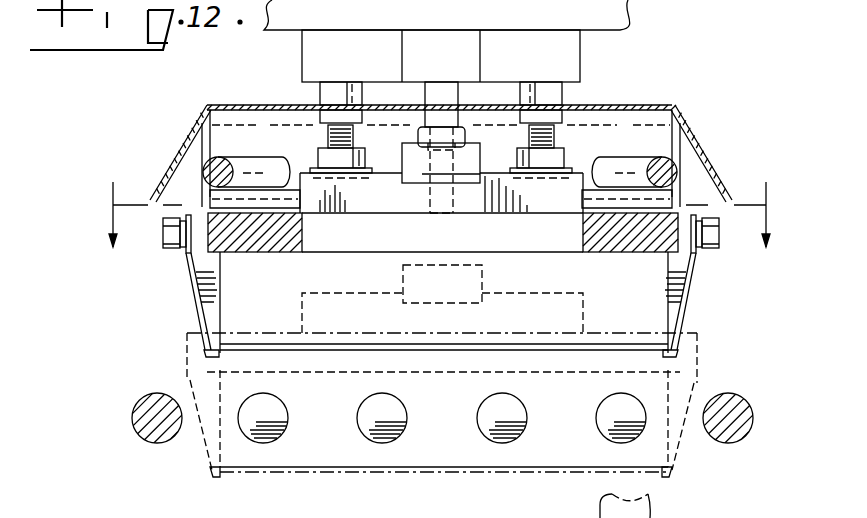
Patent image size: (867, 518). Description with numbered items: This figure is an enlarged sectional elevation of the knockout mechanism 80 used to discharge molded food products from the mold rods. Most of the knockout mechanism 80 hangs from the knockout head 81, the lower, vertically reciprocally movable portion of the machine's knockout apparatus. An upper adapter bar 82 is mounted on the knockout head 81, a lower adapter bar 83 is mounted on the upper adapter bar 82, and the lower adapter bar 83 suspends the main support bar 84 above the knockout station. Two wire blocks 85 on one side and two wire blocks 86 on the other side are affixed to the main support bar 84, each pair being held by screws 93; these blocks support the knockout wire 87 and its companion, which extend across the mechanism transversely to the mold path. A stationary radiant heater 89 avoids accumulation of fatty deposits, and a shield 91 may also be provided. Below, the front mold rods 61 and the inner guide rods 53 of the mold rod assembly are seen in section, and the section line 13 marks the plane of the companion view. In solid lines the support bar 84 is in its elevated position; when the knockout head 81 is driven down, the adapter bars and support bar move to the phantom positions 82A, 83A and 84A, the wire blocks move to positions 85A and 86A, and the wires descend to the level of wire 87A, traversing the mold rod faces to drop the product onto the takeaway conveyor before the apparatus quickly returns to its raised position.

The knockout mechanism 80 is at (193, 118).
The knockout head 81 is at (580, 59).
The shield 91 is at (663, 103).
The stationary radiant heater 89 is at (240, 157).
The lower adapter bar 83 is at (578, 178).
The upper adapter bar 82 is at (407, 178).
The section line 13- 13 is at (444, 196).
The screws 93 is at (166, 249).
The main support bar 84 is at (250, 253).
The phantom outline of upper adapter bar 82A is at (405, 273).
The phantom outline of lower adapter bar 83A is at (570, 283).
The knockout wire 87 is at (633, 343).
The wire blocks 86 is at (196, 293).
The wire blocks 85 is at (690, 284).
The lowered position of wire blocks 86A is at (188, 367).
The lowered position of wire blocks 85A is at (699, 382).
The inner guide rods 53 is at (755, 410).
The front mold rods 61 is at (652, 512).
The phantom outline of main support bar 84A is at (420, 371).
The lowered position of knockout wire 87A is at (467, 473).